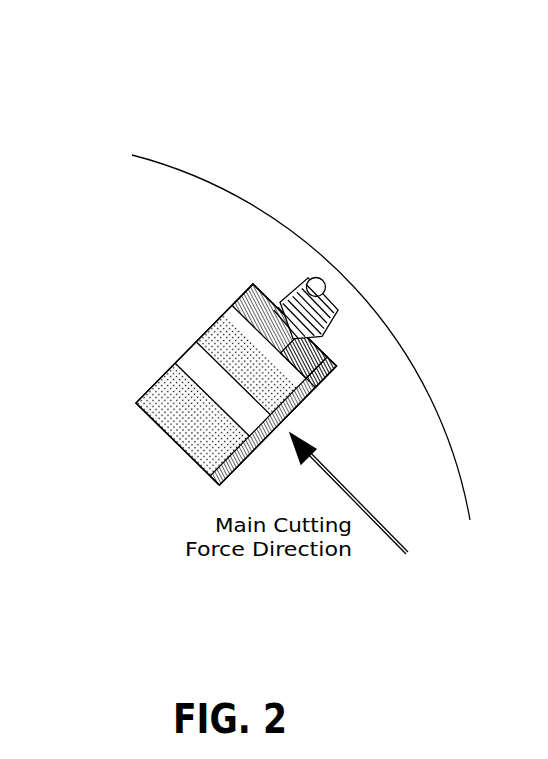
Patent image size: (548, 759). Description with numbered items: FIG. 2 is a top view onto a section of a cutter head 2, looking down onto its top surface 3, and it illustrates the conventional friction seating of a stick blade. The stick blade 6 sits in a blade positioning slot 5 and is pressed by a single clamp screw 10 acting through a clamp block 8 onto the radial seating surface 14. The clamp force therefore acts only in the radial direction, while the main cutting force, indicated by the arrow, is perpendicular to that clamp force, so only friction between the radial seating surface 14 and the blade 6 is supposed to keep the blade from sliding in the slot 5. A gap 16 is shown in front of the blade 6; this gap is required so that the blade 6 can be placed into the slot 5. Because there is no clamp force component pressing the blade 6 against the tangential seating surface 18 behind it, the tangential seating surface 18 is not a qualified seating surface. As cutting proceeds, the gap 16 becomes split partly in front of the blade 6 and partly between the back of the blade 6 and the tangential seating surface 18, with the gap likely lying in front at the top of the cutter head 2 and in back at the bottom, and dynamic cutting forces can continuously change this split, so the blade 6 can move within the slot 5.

The cutter head 2 is at (188, 205).
The top surface 3 is at (170, 229).
The blade positioning slot 5 is at (252, 283).
The stick blade 6 is at (180, 394).
The clamp block 8 is at (322, 348).
The clamp screw 10 is at (290, 290).
The radial seating surface 14 is at (183, 446).
The gap 16 is at (288, 421).
The tangential seating surface 18 is at (195, 334).